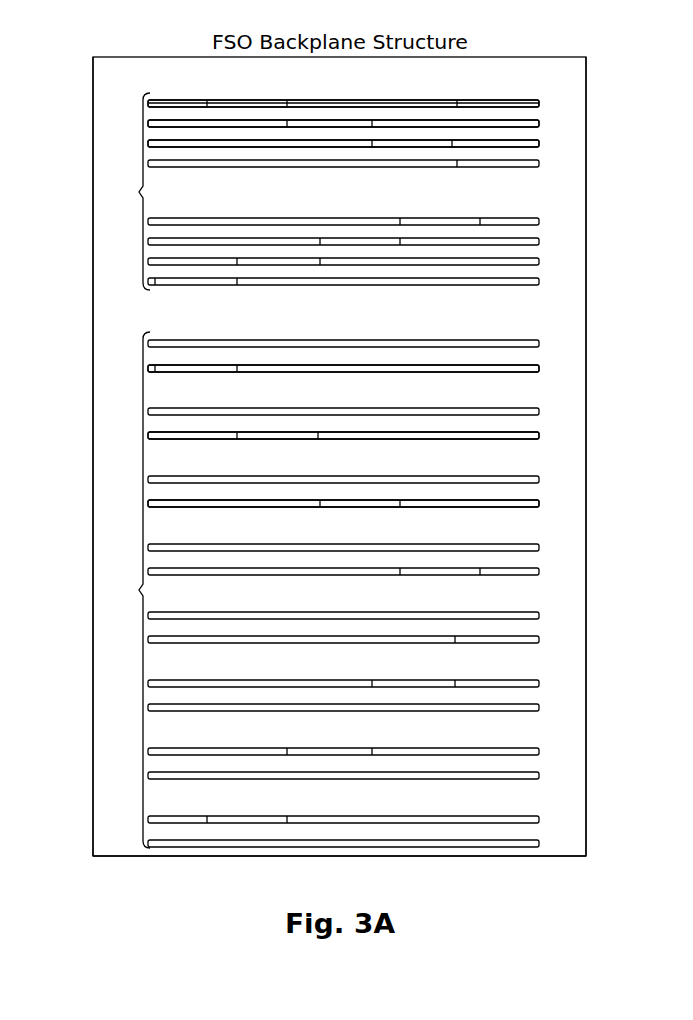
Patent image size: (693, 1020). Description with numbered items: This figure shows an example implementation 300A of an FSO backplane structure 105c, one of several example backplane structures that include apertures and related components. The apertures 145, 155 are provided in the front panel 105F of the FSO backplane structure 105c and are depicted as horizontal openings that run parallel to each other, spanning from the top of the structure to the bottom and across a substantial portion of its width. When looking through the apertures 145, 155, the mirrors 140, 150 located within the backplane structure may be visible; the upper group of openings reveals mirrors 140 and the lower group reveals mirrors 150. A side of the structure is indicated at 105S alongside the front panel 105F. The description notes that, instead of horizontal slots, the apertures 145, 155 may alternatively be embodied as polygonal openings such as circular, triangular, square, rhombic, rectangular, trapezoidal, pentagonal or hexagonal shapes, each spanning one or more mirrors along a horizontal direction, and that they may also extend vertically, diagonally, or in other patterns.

The FSO backplane structure 105c is at (339, 456).
The backplane side 105S is at (90, 292).
The front panel 105F is at (558, 446).
The example implementation 300A is at (162, 897).
The mirrors 140 is at (263, 103).
The apertures 145 is at (321, 191).
The mirrors 150 is at (218, 366).
The apertures 155 is at (321, 590).